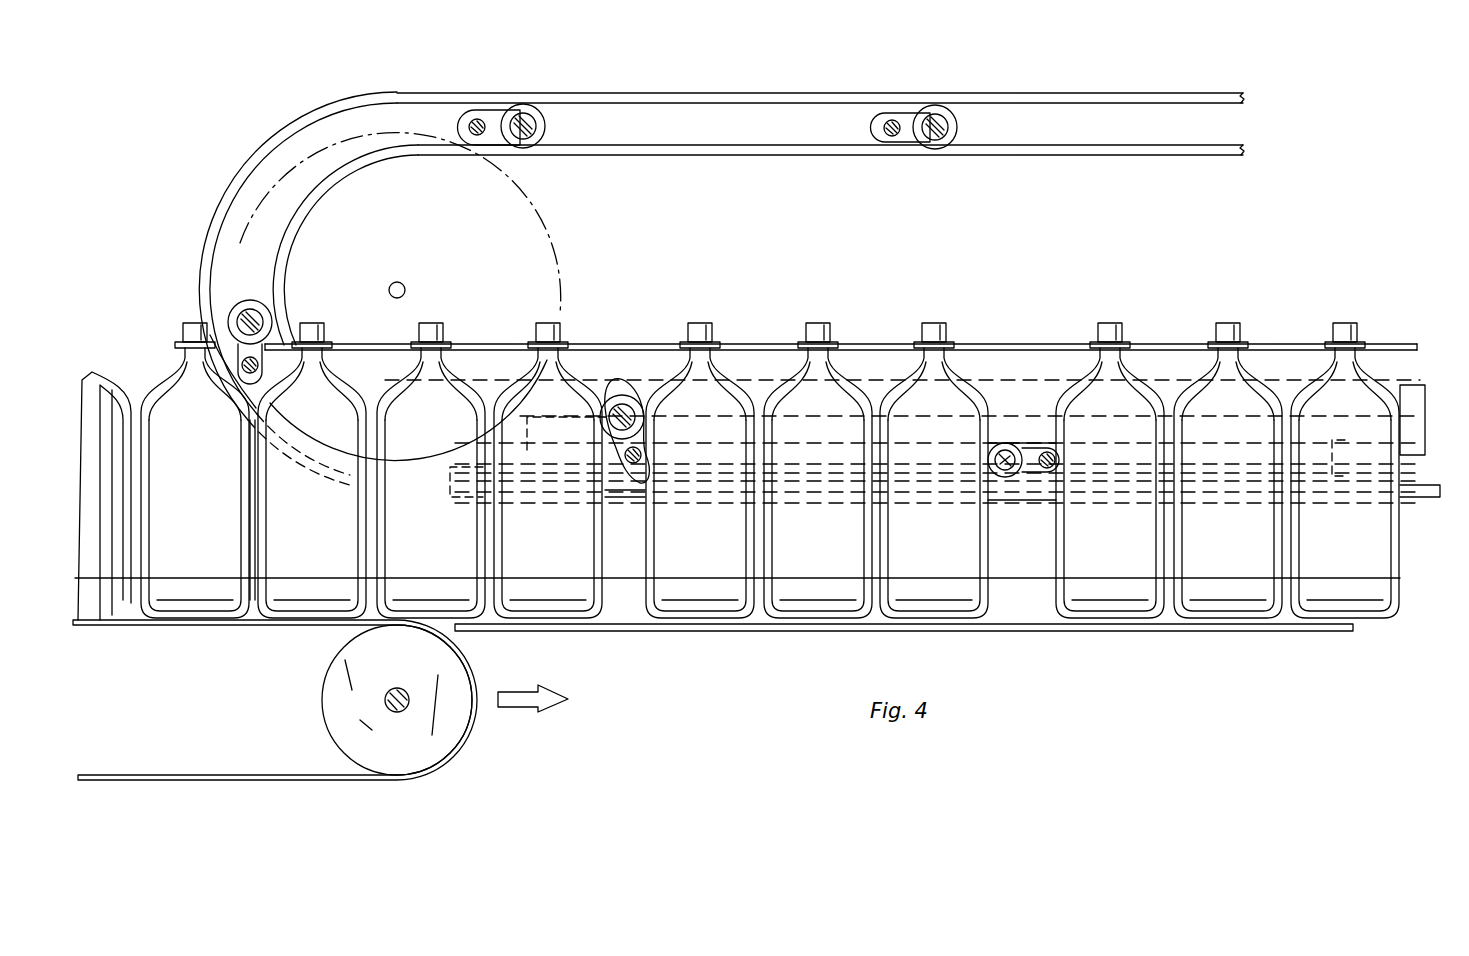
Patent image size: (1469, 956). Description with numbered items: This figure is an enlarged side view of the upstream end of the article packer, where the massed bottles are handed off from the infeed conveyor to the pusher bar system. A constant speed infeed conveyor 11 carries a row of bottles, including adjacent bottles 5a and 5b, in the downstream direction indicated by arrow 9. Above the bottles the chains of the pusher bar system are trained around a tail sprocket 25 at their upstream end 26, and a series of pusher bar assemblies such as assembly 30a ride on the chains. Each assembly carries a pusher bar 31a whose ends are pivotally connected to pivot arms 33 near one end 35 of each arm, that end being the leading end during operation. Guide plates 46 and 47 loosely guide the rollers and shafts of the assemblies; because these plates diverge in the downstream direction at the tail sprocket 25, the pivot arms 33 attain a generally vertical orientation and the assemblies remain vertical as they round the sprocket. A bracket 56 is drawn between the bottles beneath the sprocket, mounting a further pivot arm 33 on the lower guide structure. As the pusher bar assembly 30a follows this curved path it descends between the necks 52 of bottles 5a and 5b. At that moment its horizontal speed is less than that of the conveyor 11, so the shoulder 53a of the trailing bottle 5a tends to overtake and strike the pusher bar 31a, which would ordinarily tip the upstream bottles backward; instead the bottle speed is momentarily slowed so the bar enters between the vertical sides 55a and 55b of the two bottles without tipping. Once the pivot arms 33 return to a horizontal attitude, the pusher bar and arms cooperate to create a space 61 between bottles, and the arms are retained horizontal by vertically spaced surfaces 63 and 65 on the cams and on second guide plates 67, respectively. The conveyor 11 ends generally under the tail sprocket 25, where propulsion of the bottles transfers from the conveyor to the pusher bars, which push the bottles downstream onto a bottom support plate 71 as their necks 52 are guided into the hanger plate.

The bottle 5a is at (190, 486).
The bottle 5b is at (312, 470).
The arrow 9 is at (520, 702).
The infeed conveyor 11 is at (335, 685).
The tail sprocket 25 is at (290, 165).
The upstream end 26 is at (270, 108).
The pusher bar assembly 30a is at (242, 306).
The pusher bar 31a is at (240, 372).
The pivot arm 33 is at (516, 108).
The end of pivot arm 35 is at (470, 145).
The guide plate 46 is at (1118, 100).
The guide plate 47 is at (1130, 155).
The neck 52 is at (185, 345).
The shoulder 53a is at (250, 392).
The vertical side 55a is at (257, 488).
The vertical side 55b is at (250, 509).
The pivot bracket 56 is at (622, 385).
The space 61 is at (1036, 570).
The surface 63 is at (1420, 447).
The surface 65 is at (1345, 474).
The second guide plate 67 is at (1030, 500).
The bottom support plate 71 is at (698, 625).